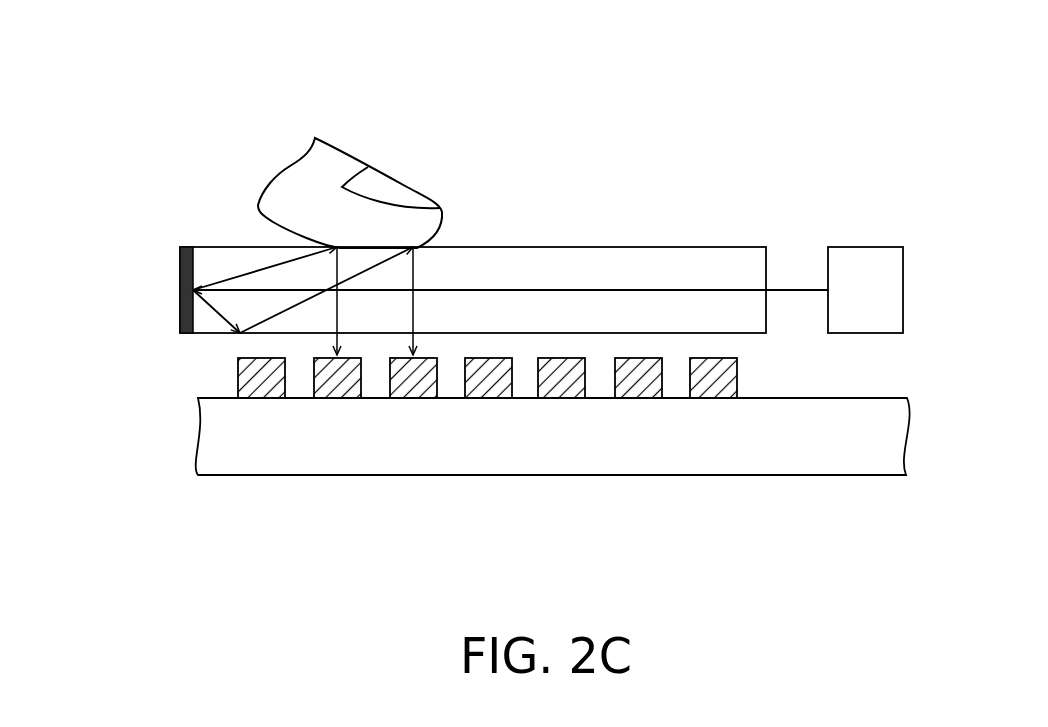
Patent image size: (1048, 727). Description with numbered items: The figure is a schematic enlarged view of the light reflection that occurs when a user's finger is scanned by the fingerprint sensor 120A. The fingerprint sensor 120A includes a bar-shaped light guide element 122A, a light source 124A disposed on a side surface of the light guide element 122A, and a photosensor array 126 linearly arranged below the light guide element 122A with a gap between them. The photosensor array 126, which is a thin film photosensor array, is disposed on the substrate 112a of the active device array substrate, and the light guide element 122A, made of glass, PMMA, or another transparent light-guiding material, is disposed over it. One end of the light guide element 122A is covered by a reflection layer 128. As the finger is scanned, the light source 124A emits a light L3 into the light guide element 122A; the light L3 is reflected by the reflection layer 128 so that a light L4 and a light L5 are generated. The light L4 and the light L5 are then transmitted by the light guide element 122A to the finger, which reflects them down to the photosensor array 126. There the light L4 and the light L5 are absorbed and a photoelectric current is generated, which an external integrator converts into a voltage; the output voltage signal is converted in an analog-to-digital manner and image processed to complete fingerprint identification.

The fingerprint sensor 120A is at (923, 125).
The light guide element 122A is at (519, 320).
The light source 124A is at (863, 262).
The photosensor array 126 is at (339, 390).
The reflection layer 128 is at (183, 247).
The substrate 112a is at (257, 453).
The light L3 is at (479, 274).
The light L4 is at (280, 300).
The light L5 is at (319, 301).